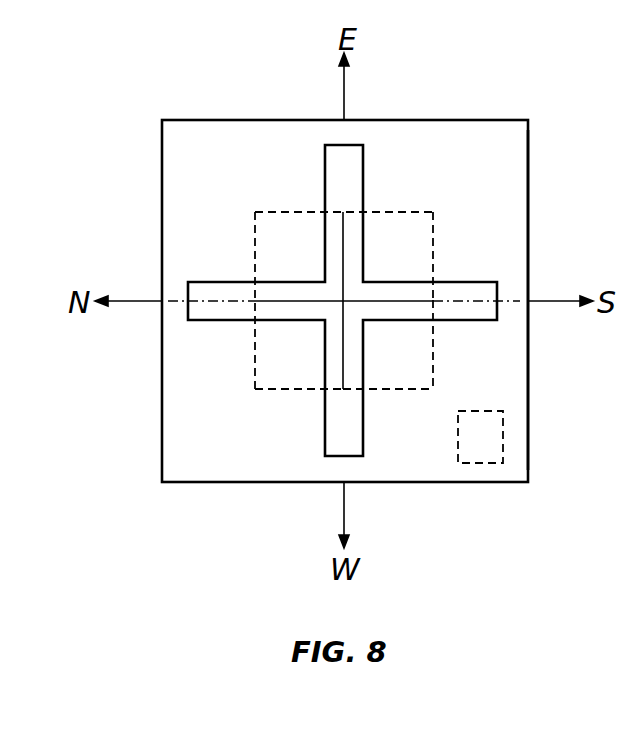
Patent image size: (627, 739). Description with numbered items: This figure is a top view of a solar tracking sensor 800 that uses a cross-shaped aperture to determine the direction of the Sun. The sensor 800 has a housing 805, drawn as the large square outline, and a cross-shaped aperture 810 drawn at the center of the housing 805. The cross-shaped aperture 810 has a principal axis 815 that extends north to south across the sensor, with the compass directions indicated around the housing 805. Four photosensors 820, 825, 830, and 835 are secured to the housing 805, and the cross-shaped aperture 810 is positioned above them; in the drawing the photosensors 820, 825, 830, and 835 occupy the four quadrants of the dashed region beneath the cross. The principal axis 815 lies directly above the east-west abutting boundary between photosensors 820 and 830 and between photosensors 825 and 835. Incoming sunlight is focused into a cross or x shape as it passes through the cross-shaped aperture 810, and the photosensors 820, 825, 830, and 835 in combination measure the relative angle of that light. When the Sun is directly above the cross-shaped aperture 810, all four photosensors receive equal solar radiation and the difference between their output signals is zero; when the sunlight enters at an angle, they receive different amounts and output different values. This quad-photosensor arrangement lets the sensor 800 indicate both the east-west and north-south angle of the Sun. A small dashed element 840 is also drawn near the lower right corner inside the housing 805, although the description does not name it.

The solar tracking sensor 800 is at (528, 120).
The housing 805 is at (528, 216).
The cross-shaped aperture 810 is at (363, 158).
The principal axis 815 is at (233, 303).
The photosensor 820 is at (254, 211).
The photosensor 825 is at (434, 211).
The photosensor 830 is at (254, 390).
The photosensor 835 is at (440, 393).
The small dashed region 840 is at (504, 437).